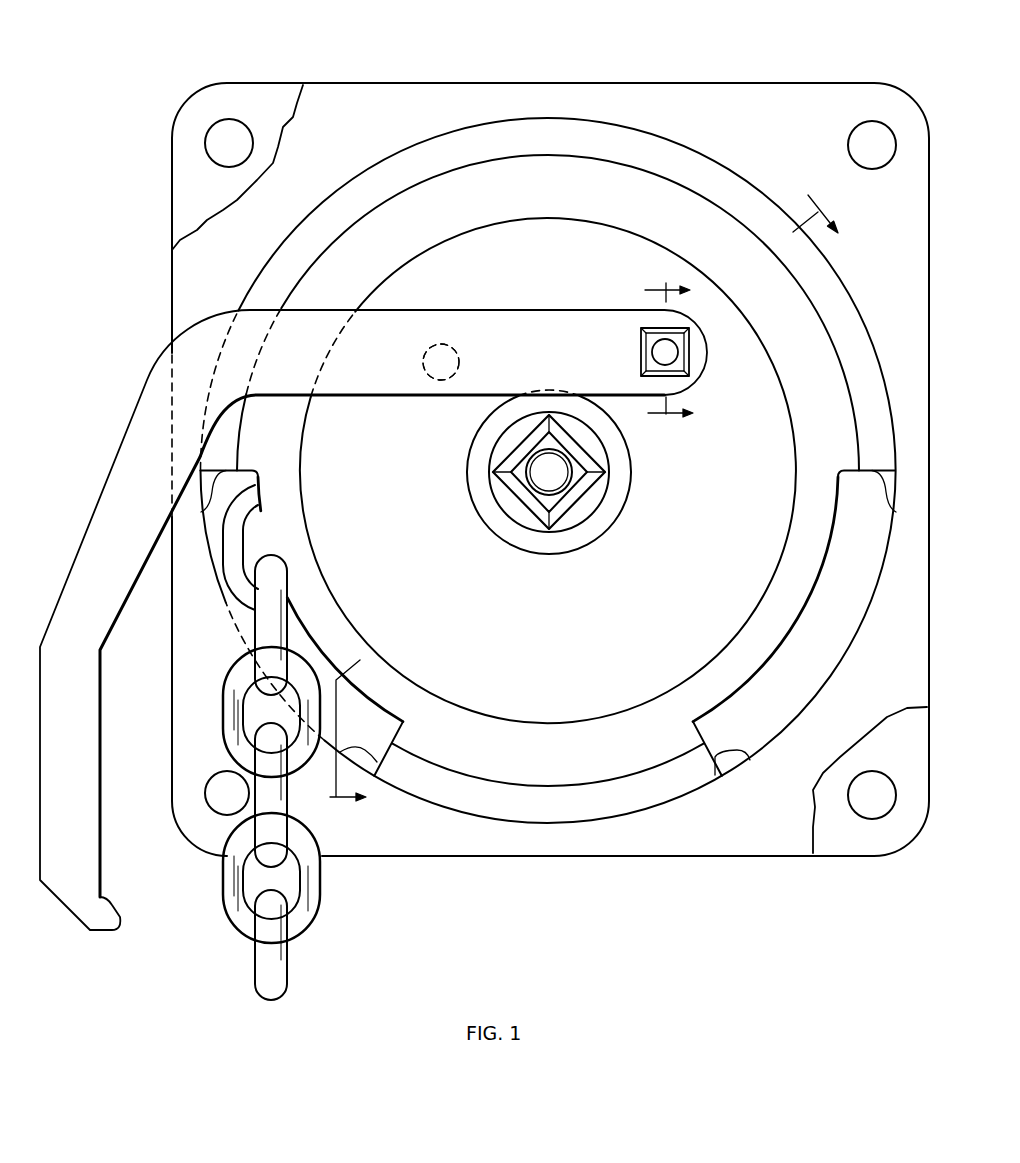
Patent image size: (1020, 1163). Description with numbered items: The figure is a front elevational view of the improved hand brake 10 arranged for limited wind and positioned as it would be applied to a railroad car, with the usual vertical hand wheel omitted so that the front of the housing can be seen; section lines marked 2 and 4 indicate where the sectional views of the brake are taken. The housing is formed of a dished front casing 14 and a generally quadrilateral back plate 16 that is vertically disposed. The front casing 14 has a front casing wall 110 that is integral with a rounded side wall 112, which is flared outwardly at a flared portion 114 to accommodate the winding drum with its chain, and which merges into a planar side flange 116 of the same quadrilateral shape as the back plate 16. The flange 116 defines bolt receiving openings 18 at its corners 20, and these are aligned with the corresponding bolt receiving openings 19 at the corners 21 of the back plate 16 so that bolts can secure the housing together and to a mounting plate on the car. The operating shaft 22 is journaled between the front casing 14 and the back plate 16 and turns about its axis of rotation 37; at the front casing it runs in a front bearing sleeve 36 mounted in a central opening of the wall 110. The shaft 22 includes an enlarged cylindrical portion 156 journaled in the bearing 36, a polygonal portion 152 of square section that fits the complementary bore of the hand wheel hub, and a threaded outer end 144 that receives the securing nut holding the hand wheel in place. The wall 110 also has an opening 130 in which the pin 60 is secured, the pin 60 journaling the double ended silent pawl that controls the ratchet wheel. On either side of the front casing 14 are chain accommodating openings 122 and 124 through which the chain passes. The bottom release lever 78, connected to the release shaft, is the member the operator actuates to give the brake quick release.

The hand brake 10 is at (814, 66).
The front casing 14 is at (684, 180).
The back plate 16 is at (168, 140).
The bolt receiving openings 18 is at (876, 122).
The bolt receiving openings 19 is at (244, 127).
The corners 20 is at (912, 120).
The corners 21 is at (210, 93).
The operating shaft 22 is at (540, 548).
The front bearing sleeve 36 is at (618, 500).
The axis of rotation 37 is at (550, 478).
The pin 60 is at (449, 345).
The bottom release lever 78 is at (145, 405).
The front casing wall 110 is at (600, 238).
The rounded side wall 112 is at (789, 290).
The flared portion 114 is at (747, 197).
The planar side flange 116 is at (677, 100).
The chain accommodating opening 122 is at (368, 707).
The chain accommodating opening 124 is at (730, 702).
The opening 130 is at (460, 360).
The outer end 144 is at (522, 467).
The polygonal portion 152 is at (580, 485).
The enlarged cylindrical portion 156 is at (583, 420).
The section line 2- 2 is at (572, 492).
The section line 4- 4 is at (658, 352).